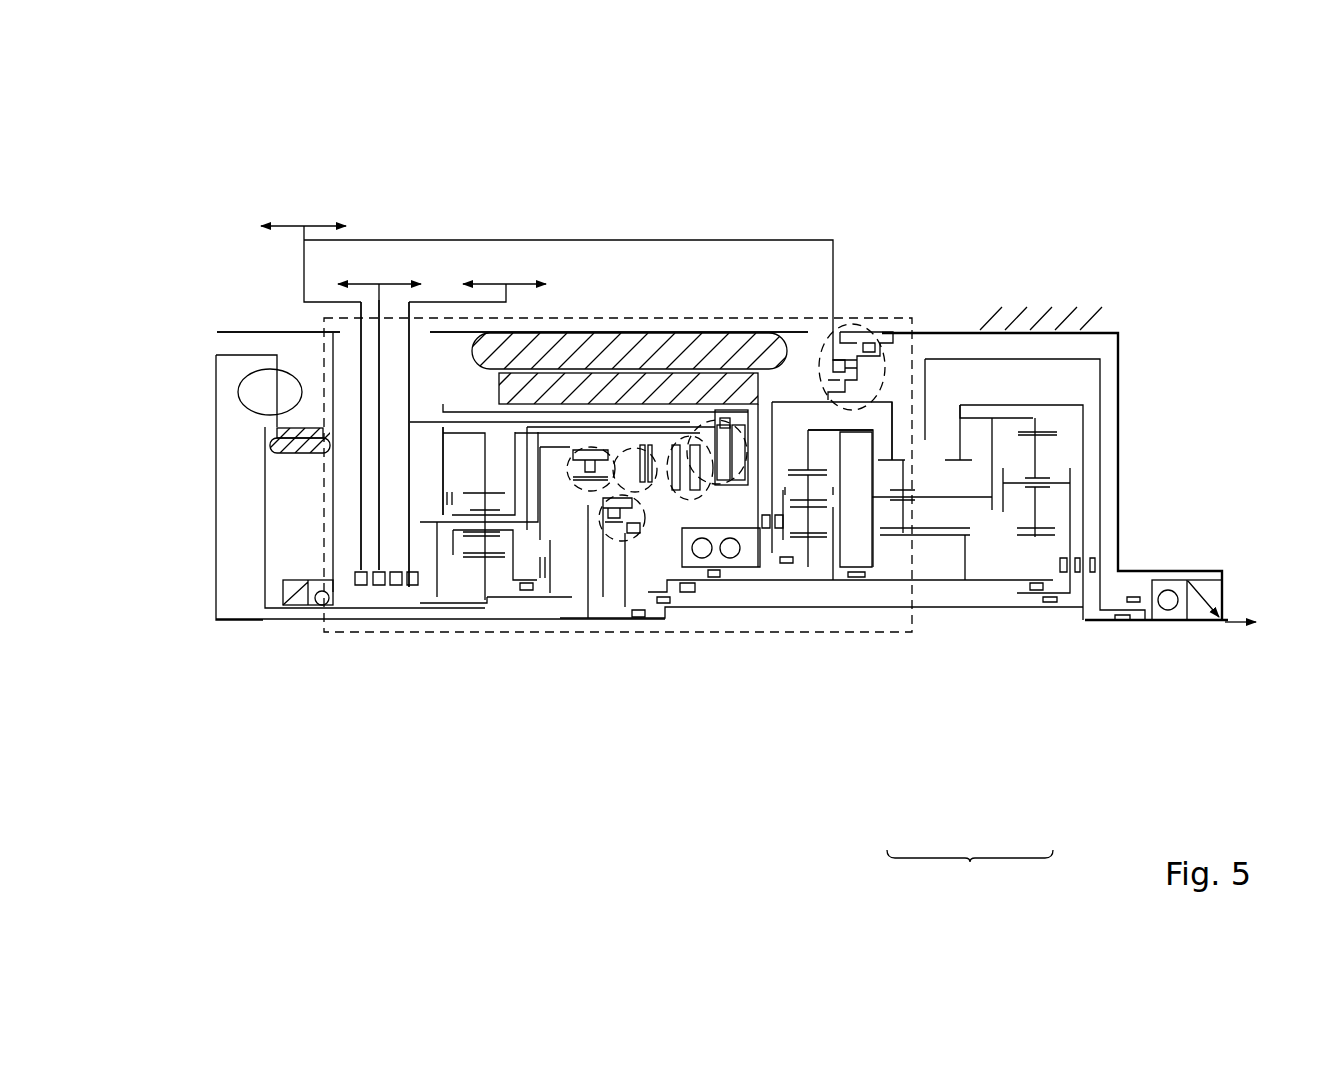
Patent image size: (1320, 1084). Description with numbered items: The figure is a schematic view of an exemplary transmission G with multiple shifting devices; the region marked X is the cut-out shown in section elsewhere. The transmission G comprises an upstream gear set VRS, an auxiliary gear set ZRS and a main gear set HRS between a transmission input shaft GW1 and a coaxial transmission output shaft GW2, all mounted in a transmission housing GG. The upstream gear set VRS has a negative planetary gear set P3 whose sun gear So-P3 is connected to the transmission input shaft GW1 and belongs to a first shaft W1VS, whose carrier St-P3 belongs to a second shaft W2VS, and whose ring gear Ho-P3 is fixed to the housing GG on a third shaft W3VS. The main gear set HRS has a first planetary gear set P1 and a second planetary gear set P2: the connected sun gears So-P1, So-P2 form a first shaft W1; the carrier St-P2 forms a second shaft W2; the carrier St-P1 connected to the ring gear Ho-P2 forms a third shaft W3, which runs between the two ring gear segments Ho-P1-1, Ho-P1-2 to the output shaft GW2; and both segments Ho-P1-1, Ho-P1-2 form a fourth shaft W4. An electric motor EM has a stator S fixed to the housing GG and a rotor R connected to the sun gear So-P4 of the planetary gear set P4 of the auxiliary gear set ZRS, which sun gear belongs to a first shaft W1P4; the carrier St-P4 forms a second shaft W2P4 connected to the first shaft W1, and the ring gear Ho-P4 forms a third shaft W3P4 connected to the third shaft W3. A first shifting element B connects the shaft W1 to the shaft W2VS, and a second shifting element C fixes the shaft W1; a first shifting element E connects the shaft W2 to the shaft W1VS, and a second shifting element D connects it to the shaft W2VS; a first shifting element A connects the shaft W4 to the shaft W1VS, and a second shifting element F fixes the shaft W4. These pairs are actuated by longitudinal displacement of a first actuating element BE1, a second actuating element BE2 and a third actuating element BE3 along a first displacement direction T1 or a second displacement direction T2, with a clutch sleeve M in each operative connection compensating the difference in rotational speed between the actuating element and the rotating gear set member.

The transmission G is at (366, 211).
The cut-out marking X is at (323, 355).
The first displacement direction T1 is at (425, 233).
The second displacement direction T2 is at (403, 235).
The transmission input shaft GW1 is at (207, 628).
The transmission output shaft GW2 is at (1233, 628).
The clutch sleeve M is at (396, 588).
The first actuating element BE1 is at (410, 480).
The second actuating element BE2 is at (380, 507).
The third actuating element BE3 is at (360, 542).
The electric motor EM is at (698, 331).
The stator S is at (770, 352).
The rotor R is at (652, 392).
The third shaft of the upstream gear set W3VS is at (497, 488).
The ring gear of planetary gear set P3 Ho-P3 is at (455, 430).
The carrier of planetary gear set P3 St-P3 is at (465, 533).
The sun gear of planetary gear set P3 So-P3 is at (480, 555).
The first shaft of the upstream gear set W1VS is at (487, 573).
The second shaft of the upstream gear set W2VS is at (513, 543).
The upstream gear set VRS is at (485, 765).
The planetary gear set of the upstream gear set P3 is at (470, 652).
The first shifting element E is at (592, 442).
The second shifting element D is at (628, 441).
The first shifting element B is at (680, 432).
The second shifting element C is at (730, 417).
The first shifting element A is at (637, 546).
The second shifting element F is at (870, 316).
The first shaft of the auxiliary gear set W1P4 is at (768, 572).
The ring gear of planetary gear set P4 Ho-P4 is at (793, 467).
The carrier of planetary gear set P4 St-P4 is at (826, 503).
The sun gear of planetary gear set P4 So-P4 is at (815, 540).
The second shaft of the auxiliary gear set W2P4 is at (840, 580).
The third shaft of the auxiliary gear set W3P4 is at (873, 547).
The auxiliary gear set ZRS is at (808, 765).
The planetary gear set of the auxiliary gear set P4 is at (834, 653).
The first segment of ring gear Ho-P1 Ho-P1-1 is at (891, 440).
The second segment of ring gear Ho-P1 Ho-P1-2 is at (961, 440).
The carrier of first planetary gear set P1 St-P1 is at (947, 493).
The sun gear of first planetary gear set P1 So-P1 is at (920, 535).
The first planetary gear set of the main gear set P1 is at (903, 765).
The first shaft of the main gear set W1 is at (1018, 580).
The second shaft of the main gear set W2 is at (1072, 517).
The third shaft of the main gear set W3 is at (1078, 358).
The fourth shaft of the main gear set W4 is at (1020, 403).
The transmission housing GG is at (1080, 323).
The ring gear of second planetary gear set P2 Ho-P2 is at (1045, 430).
The carrier of second planetary gear set P2 St-P2 is at (1057, 478).
The sun gear of second planetary gear set P2 So-P2 is at (1043, 533).
The second planetary gear set of the main gear set P2 is at (1037, 765).
The main gear set HRS is at (970, 873).